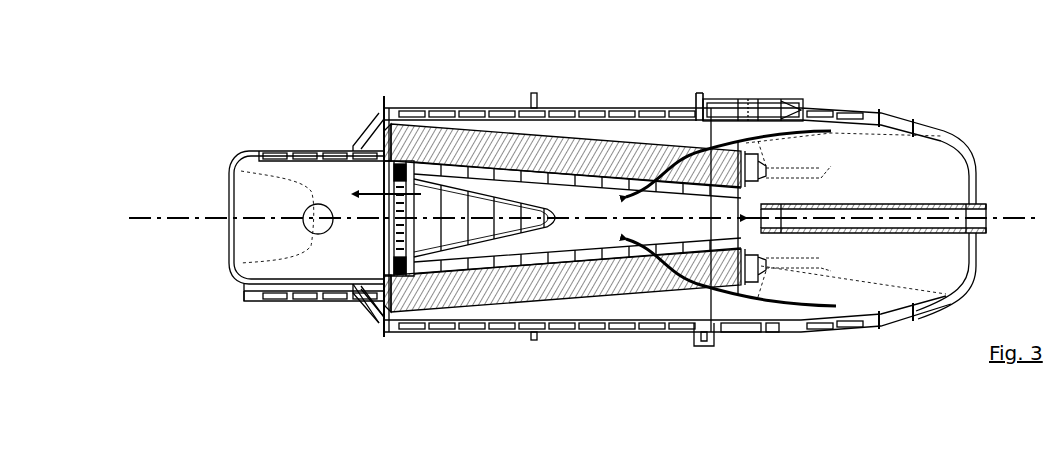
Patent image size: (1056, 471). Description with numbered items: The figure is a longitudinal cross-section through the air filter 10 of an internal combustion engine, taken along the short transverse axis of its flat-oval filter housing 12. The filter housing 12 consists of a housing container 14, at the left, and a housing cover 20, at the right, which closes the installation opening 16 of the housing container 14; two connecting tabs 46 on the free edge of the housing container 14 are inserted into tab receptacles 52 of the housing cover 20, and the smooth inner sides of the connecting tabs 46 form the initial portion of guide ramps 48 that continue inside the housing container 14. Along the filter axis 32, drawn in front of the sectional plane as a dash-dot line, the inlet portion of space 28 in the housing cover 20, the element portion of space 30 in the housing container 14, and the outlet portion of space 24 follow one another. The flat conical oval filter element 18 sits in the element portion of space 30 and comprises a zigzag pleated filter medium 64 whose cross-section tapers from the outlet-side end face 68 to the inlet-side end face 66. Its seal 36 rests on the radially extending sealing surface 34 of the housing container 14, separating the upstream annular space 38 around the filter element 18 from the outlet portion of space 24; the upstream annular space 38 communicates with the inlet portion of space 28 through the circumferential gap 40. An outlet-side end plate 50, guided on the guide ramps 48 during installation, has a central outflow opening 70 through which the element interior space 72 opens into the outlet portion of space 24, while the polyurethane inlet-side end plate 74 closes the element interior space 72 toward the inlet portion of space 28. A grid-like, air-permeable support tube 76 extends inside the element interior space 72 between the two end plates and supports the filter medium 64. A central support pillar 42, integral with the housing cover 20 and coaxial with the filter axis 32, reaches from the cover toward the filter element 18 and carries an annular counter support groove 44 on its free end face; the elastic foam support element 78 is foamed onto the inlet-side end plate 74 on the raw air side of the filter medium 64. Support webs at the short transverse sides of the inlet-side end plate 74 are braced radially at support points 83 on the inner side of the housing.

The air filter 10 is at (212, 129).
The filter housing 12 is at (611, 102).
The housing container 14 is at (490, 104).
The installation opening 16 is at (686, 108).
The filter element 18 is at (556, 132).
The housing cover 20 is at (947, 128).
The outlet portion of space 24 is at (287, 217).
The inlet portion of space 28 is at (846, 215).
The element portion of space 30 is at (650, 128).
The filter axis 32 is at (190, 217).
The sealing surface 34 is at (352, 147).
The seal 36 is at (370, 120).
The upstream annular space 38 is at (592, 312).
The circumferential gap 40 is at (735, 125).
The support pillar 42 is at (917, 202).
The counter support groove 44 is at (820, 207).
The connecting tabs 46 is at (768, 100).
The guide ramps 48 is at (753, 128).
The outlet-side end plate 50 is at (378, 332).
The tab receptacles 52 is at (793, 98).
The filter medium 64 is at (486, 306).
The inlet-side end face 66 is at (768, 331).
The outlet-side end face 68 is at (393, 108).
The outflow opening 70 is at (383, 240).
The element interior space 72 is at (501, 218).
The inlet-side end plate 74 is at (732, 335).
The support tube 76 is at (421, 320).
The support element 78 is at (767, 257).
The support points 83 is at (800, 160).